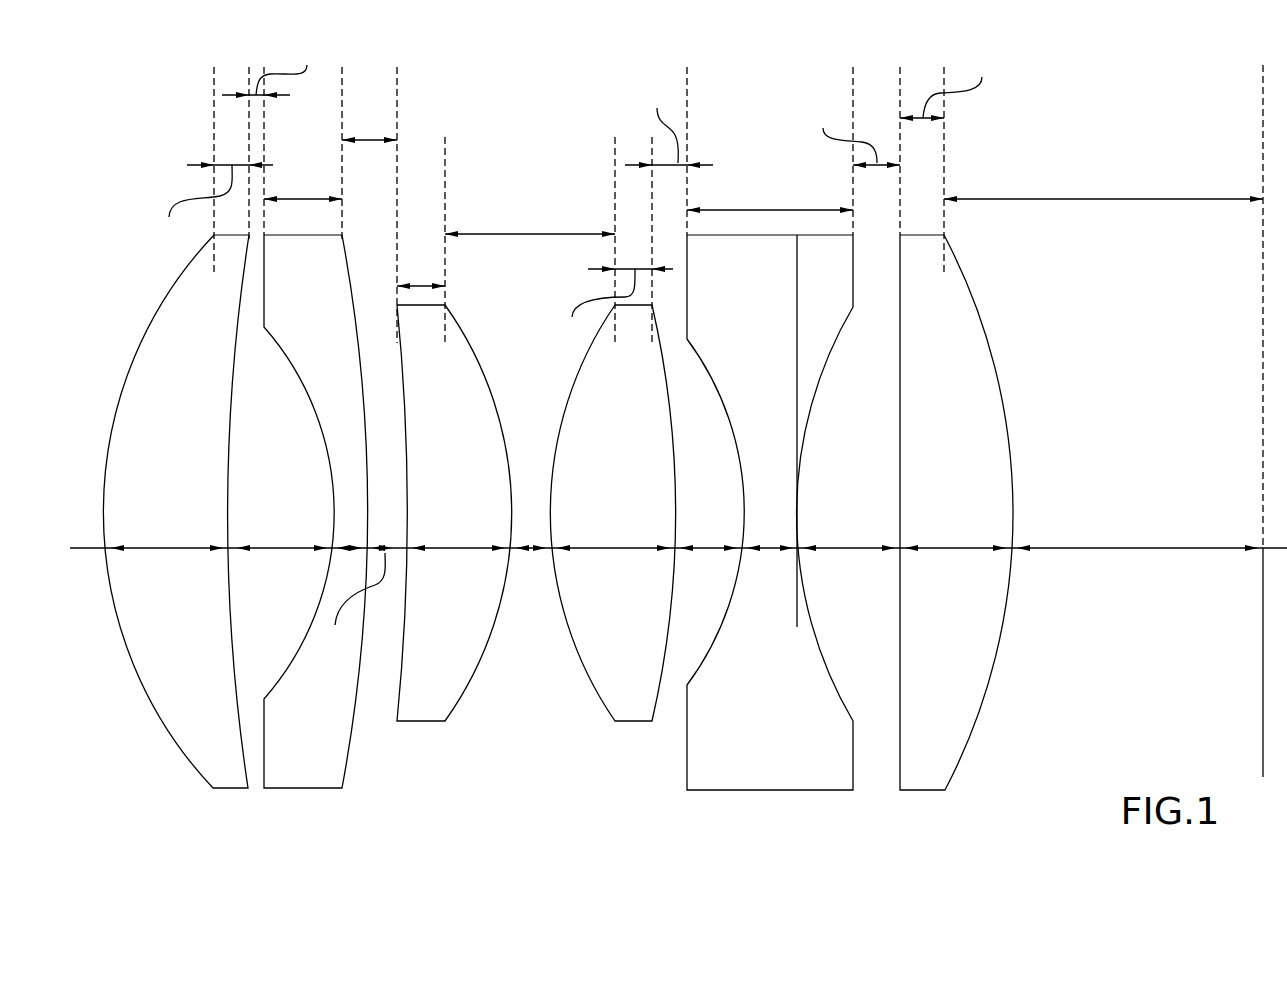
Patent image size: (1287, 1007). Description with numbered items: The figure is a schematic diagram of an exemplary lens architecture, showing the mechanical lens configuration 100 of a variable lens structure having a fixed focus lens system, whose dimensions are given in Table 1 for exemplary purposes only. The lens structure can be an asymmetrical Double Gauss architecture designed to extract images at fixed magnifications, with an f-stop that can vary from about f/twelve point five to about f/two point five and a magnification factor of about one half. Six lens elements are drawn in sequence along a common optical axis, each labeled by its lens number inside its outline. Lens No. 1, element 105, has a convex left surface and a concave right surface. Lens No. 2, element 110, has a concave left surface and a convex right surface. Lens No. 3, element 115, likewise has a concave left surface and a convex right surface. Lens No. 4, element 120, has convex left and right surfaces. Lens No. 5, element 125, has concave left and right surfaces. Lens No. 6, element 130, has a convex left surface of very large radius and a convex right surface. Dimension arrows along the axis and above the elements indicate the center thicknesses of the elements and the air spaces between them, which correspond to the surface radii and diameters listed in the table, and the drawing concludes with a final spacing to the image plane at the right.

The mechanical lens configuration 100 is at (530, 127).
The lens No. 1 105 is at (176, 524).
The lens No. 2 110 is at (344, 529).
The lens No. 3 115 is at (454, 540).
The lens No. 4 120 is at (612, 540).
The lens No. 5 125 is at (730, 522).
The lens No. 6 130 is at (956, 525).
The lens No. 1 is at (140, 783).
The lens No. 2 is at (315, 511).
The lens No. 3 is at (454, 513).
The lens No. 4 is at (612, 513).
The lens No. 5 is at (770, 512).
The lens No. 6 is at (975, 805).